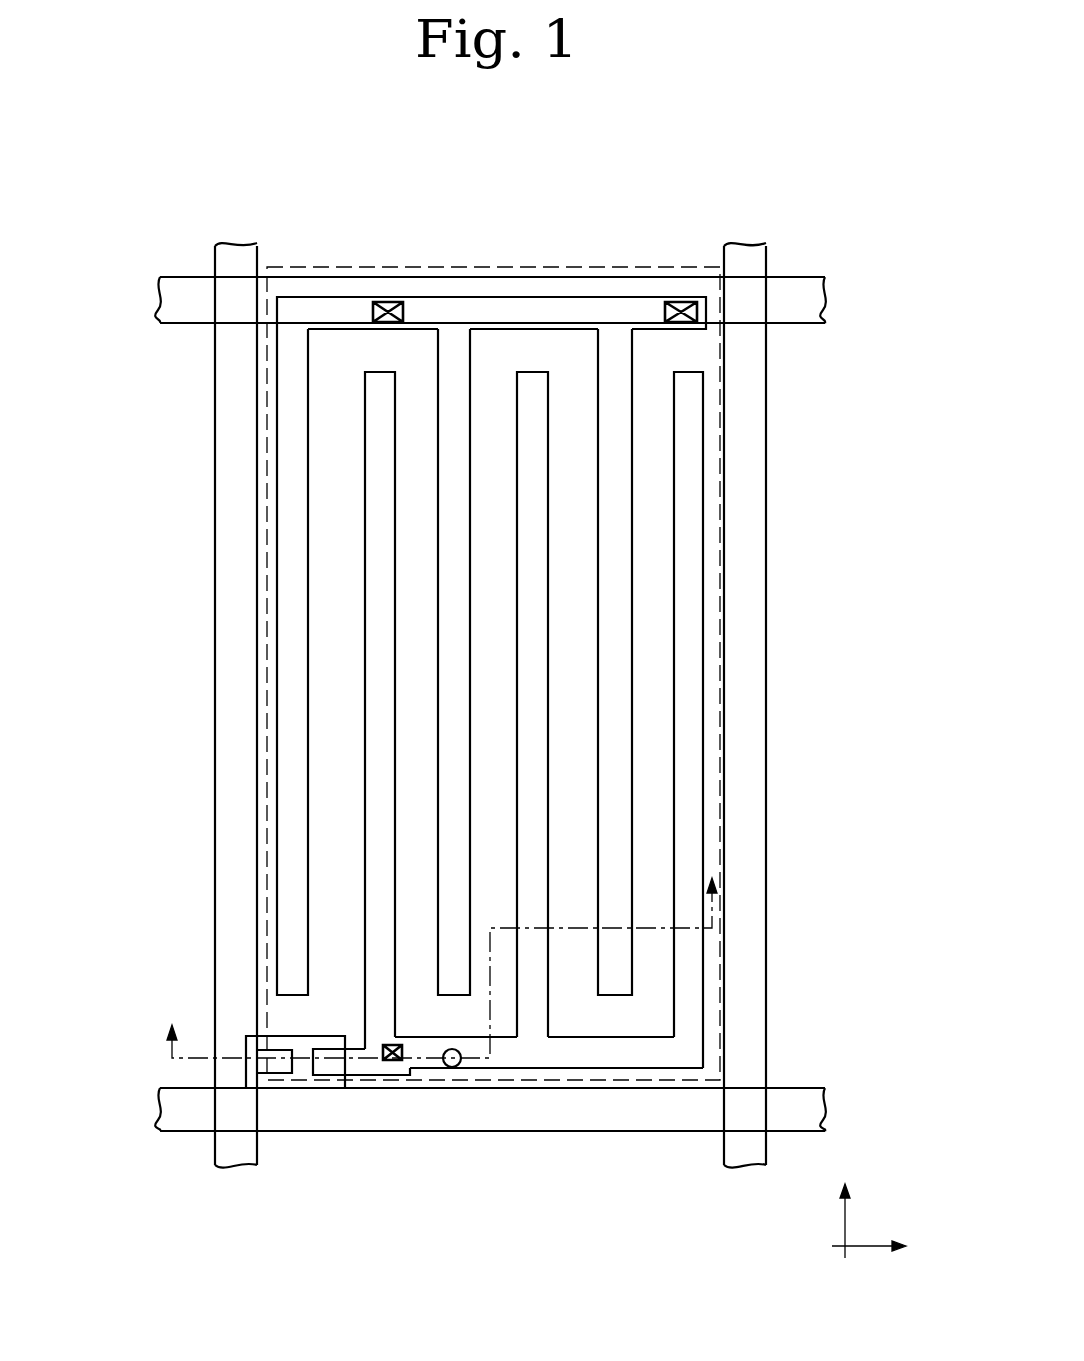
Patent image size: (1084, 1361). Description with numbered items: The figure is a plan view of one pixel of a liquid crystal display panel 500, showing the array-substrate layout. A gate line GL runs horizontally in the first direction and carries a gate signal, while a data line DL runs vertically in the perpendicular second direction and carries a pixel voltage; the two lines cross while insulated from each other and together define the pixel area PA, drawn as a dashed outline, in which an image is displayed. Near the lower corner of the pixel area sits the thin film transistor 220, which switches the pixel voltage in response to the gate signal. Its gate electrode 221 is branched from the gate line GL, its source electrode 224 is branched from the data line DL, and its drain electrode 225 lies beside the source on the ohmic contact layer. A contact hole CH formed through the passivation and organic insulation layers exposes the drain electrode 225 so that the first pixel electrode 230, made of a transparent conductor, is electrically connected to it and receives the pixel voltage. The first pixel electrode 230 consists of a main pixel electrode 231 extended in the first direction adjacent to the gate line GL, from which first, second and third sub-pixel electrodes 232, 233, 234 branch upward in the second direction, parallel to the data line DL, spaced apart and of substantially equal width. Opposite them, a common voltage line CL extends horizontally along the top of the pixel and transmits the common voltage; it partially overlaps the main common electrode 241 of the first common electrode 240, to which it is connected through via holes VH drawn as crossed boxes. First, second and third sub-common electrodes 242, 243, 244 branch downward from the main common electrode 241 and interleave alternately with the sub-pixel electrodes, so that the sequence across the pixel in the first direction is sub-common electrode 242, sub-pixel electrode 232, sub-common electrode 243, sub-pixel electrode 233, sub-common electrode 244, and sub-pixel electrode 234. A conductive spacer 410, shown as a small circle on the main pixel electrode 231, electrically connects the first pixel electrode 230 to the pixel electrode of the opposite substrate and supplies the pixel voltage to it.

The liquid crystal display panel 500 is at (718, 113).
The first common electrode 240 is at (603, 187).
The main common electrode 241 is at (425, 312).
The first sub-common electrode 242 is at (293, 348).
The second sub-common electrode 243 is at (457, 347).
The third sub-common electrode 244 is at (615, 343).
The first pixel electrode 230 is at (743, 1200).
The main pixel electrode 231 is at (620, 1057).
The first sub-pixel electrode 232 is at (383, 1013).
The second sub-pixel electrode 233 is at (530, 1010).
The third sub-pixel electrode 234 is at (685, 1020).
The thin film transistor 220 is at (425, 1200).
The source electrode 224 is at (273, 1067).
The gate electrode 221 is at (302, 1070).
The drain electrode 225 is at (353, 1068).
The conductive spacer 410 is at (452, 1067).
The contact hole CH is at (395, 1067).
The via hole VH is at (680, 302).
The pixel area PA is at (320, 266).
The common voltage line CL is at (807, 302).
The gate line GL is at (160, 1109).
The data line DL is at (218, 1153).